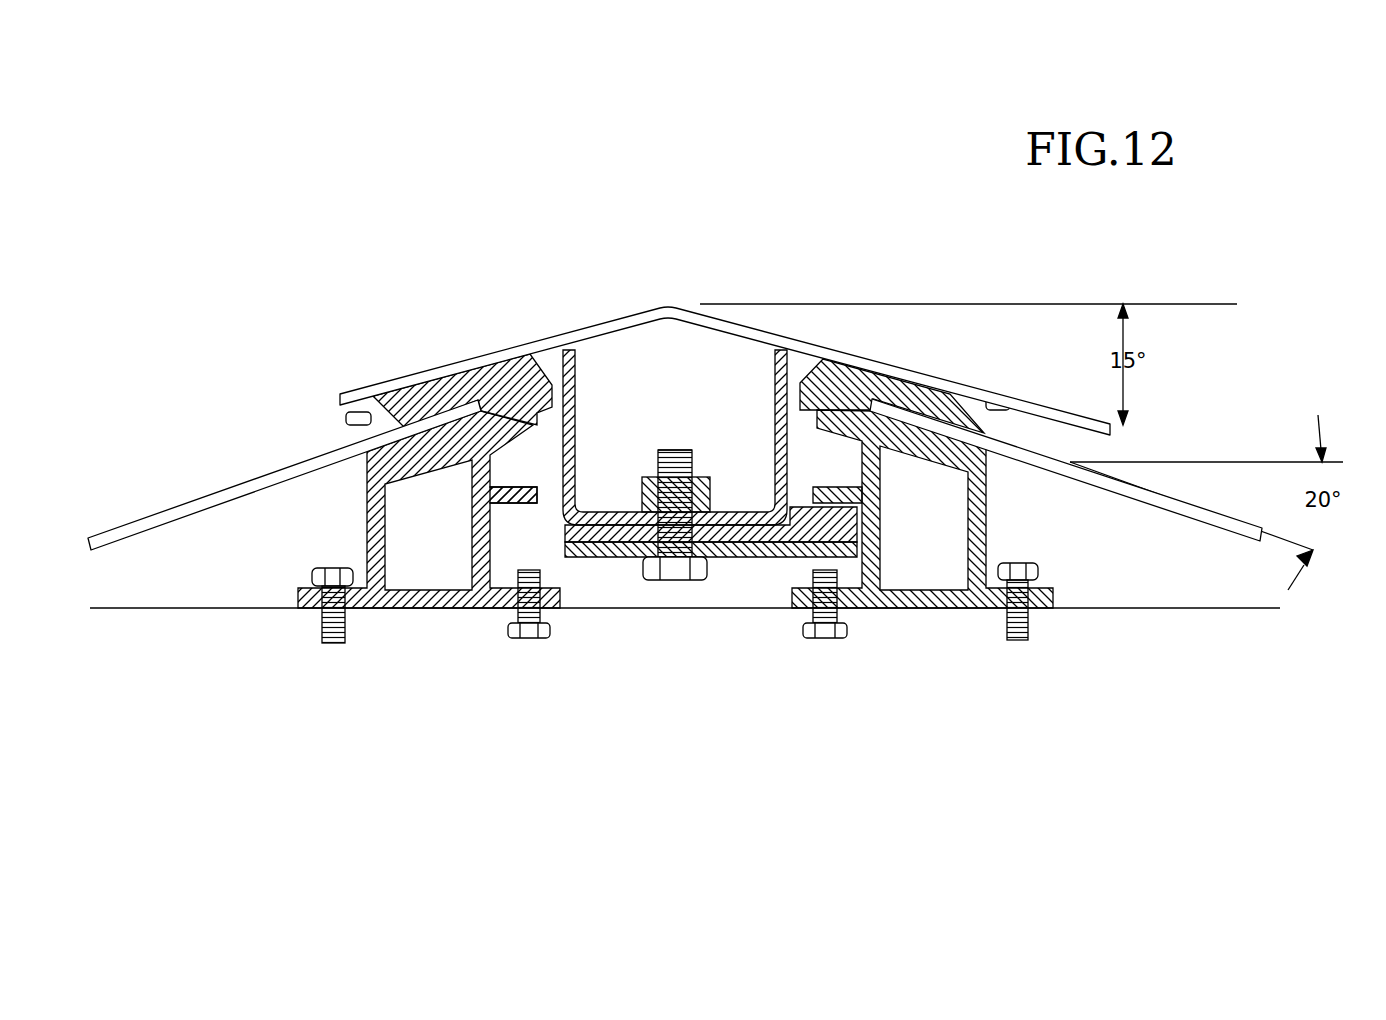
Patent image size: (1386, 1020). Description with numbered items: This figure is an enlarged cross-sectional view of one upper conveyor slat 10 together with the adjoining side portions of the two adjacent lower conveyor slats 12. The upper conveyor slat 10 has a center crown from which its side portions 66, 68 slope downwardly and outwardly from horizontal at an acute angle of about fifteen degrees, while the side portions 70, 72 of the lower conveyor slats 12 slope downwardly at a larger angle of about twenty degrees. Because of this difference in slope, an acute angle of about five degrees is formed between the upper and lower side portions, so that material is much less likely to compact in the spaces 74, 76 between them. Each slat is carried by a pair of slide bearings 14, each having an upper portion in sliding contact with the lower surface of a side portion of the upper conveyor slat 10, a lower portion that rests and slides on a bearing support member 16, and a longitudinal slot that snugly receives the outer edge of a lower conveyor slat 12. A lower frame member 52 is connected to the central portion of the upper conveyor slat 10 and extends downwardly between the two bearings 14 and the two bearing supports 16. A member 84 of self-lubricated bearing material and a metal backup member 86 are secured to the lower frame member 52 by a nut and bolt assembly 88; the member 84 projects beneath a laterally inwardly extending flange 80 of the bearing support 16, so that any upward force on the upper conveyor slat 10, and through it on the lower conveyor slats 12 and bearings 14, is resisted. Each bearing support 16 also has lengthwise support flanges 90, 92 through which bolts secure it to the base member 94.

The upper conveyor slat 10 is at (725, 344).
The lower conveyor slat 12 is at (675, 474).
The slide bearing 14 is at (505, 362).
The bearing support member 16 is at (370, 610).
The lower frame member 52 is at (583, 408).
The side portion of upper conveyor slat 66 is at (428, 378).
The side portion of upper conveyor slat 68 is at (940, 375).
The side portion of lower conveyor slat 70 is at (288, 480).
The side portion of lower conveyor slat 72 is at (1067, 477).
The space 74 is at (367, 423).
The space 76 is at (1010, 417).
The laterally inwardly extending flange 80 is at (520, 504).
The member made from bearing material 84 is at (740, 530).
The backup member 86 is at (613, 560).
The nut and bolt assembly 88 is at (707, 490).
The support flange 90 is at (297, 597).
The support flange 92 is at (493, 597).
The base member 94 is at (130, 612).